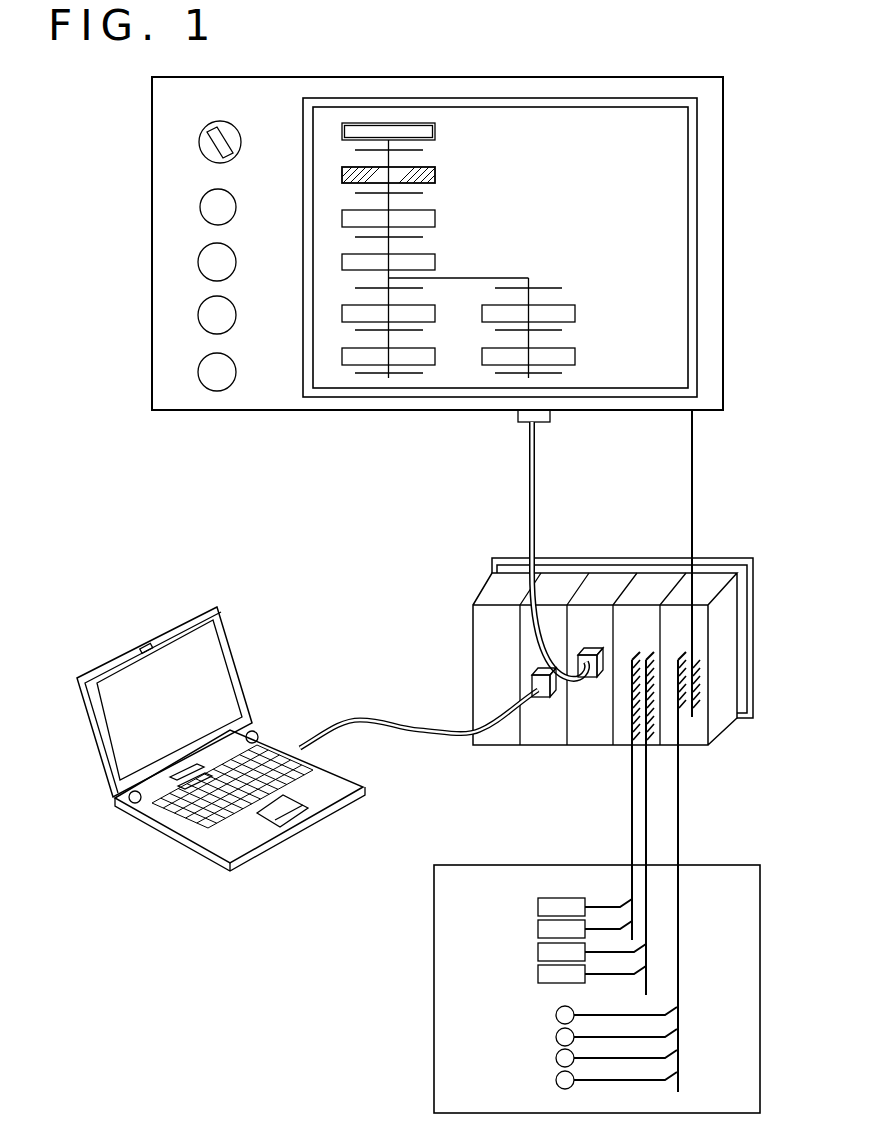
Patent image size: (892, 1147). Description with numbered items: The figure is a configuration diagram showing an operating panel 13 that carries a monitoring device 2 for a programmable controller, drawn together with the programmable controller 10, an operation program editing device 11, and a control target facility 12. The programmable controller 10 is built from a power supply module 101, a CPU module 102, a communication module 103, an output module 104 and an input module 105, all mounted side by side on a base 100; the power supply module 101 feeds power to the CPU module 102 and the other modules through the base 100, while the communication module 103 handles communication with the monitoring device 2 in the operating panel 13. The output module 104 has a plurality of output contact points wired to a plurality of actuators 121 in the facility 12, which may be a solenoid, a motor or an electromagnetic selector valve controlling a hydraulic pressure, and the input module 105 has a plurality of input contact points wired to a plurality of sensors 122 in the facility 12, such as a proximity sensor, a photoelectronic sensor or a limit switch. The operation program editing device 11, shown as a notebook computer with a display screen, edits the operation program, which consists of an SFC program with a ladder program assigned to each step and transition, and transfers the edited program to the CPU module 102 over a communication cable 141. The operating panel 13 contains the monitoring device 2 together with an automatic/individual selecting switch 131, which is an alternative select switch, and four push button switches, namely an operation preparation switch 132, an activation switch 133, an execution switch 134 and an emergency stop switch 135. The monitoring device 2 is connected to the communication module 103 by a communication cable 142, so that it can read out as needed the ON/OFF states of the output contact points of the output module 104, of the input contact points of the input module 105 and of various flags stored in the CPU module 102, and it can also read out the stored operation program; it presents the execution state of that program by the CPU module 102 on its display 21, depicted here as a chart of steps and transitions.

The monitoring device 2 is at (612, 93).
The programmable controller 10 is at (517, 523).
The operation program editing device 11 is at (139, 613).
The control target facility 12 is at (520, 865).
The operating panel 13 is at (310, 77).
The display 21 is at (672, 212).
The base 100 is at (755, 581).
The power supply module 101 is at (507, 584).
The CPU module 102 is at (560, 576).
The communication module 103 is at (605, 576).
The output module 104 is at (653, 576).
The input module 105 is at (708, 576).
The actuators 121 is at (538, 972).
The sensors 122 is at (556, 1080).
The automatic/individual selecting switch 131 is at (198, 142).
The operation preparation switch 132 is at (200, 207).
The activation switch 133 is at (198, 262).
The execution switch 134 is at (198, 315).
The emergency stop switch 135 is at (198, 371).
The communication cable 141 is at (378, 720).
The communication cable 142 is at (538, 476).